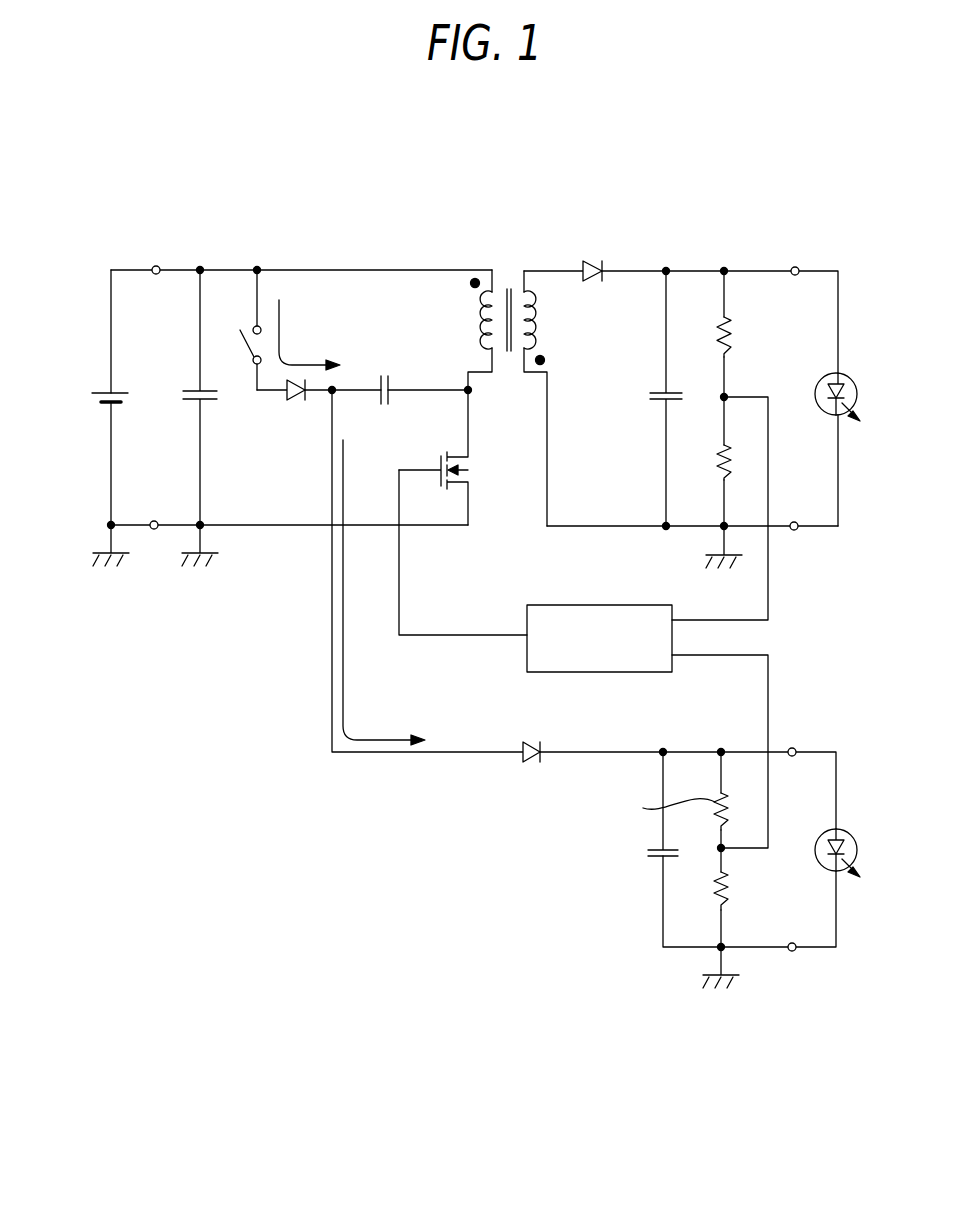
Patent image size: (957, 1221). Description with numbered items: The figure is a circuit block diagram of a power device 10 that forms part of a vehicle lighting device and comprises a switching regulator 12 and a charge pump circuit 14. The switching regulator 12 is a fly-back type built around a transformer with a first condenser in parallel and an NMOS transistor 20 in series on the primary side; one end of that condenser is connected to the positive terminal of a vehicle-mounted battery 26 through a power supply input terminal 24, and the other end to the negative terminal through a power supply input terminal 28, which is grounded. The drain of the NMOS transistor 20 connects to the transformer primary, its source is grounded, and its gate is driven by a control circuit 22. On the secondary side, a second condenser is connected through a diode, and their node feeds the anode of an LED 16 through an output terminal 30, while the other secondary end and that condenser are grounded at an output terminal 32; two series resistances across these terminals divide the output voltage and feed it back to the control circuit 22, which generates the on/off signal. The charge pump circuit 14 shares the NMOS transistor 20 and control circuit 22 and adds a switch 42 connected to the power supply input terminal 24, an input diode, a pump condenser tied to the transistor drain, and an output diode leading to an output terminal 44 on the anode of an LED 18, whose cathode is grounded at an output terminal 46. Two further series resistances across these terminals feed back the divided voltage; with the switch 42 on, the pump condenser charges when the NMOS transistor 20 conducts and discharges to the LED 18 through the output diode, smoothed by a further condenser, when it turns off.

The power device 10 is at (454, 188).
The switching regulator 12 is at (578, 228).
The charge pump circuit 14 is at (465, 773).
The LED 16 is at (827, 377).
The LED 18 is at (820, 833).
The NMOS transistor 20 is at (470, 467).
The control circuit 22 is at (552, 604).
The power supply input terminal 24 is at (156, 266).
The battery 26 is at (88, 397).
The power supply input terminal 28 is at (153, 529).
The output terminal 30 is at (795, 267).
The output terminal 32 is at (794, 530).
The switch 42 is at (235, 338).
The output terminal 44 is at (792, 748).
The output terminal 46 is at (792, 952).